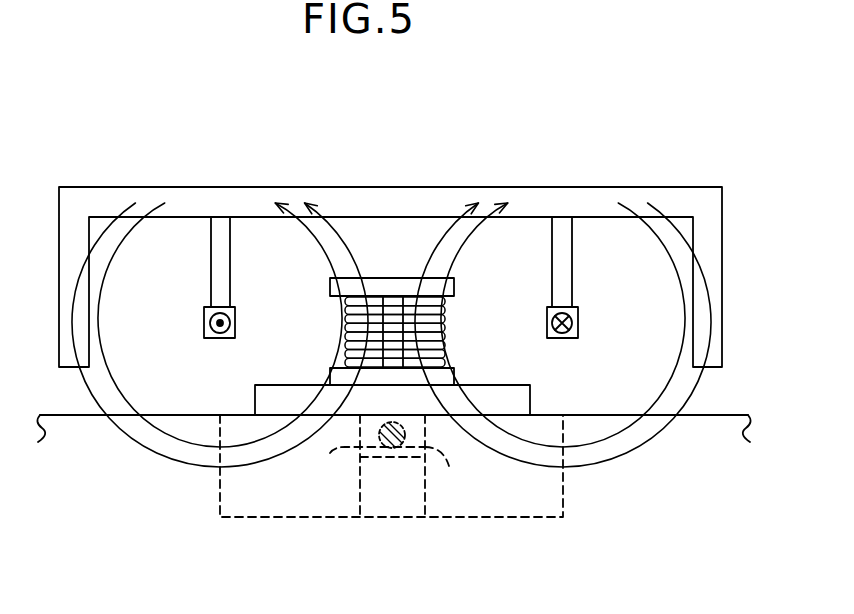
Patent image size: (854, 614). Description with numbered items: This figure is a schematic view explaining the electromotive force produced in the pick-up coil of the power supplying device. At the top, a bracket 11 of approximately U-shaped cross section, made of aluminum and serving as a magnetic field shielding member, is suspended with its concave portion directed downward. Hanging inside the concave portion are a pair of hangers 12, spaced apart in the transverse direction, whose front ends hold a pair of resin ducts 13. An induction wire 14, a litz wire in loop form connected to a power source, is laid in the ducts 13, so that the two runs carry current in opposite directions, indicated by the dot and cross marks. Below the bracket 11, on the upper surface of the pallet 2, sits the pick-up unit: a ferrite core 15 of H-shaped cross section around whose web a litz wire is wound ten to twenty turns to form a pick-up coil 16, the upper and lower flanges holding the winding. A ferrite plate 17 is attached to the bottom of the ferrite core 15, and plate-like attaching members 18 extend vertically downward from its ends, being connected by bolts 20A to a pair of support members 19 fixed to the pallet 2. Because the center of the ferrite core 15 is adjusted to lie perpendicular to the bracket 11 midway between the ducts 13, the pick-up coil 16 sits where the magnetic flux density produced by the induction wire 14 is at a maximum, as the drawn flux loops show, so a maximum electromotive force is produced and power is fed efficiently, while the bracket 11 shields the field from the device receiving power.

The pallet 2 is at (62, 428).
The bracket 11 is at (385, 187).
The hangers 12 is at (223, 267).
The ducts 13 is at (237, 326).
The induction wire 14 is at (218, 327).
The ferrite core 15 is at (387, 283).
The pick-up coil 16 is at (345, 338).
The ferrite plate 17 is at (255, 402).
The attaching members 18 is at (391, 466).
The support members 19 is at (372, 477).
The bolts 20A is at (378, 441).